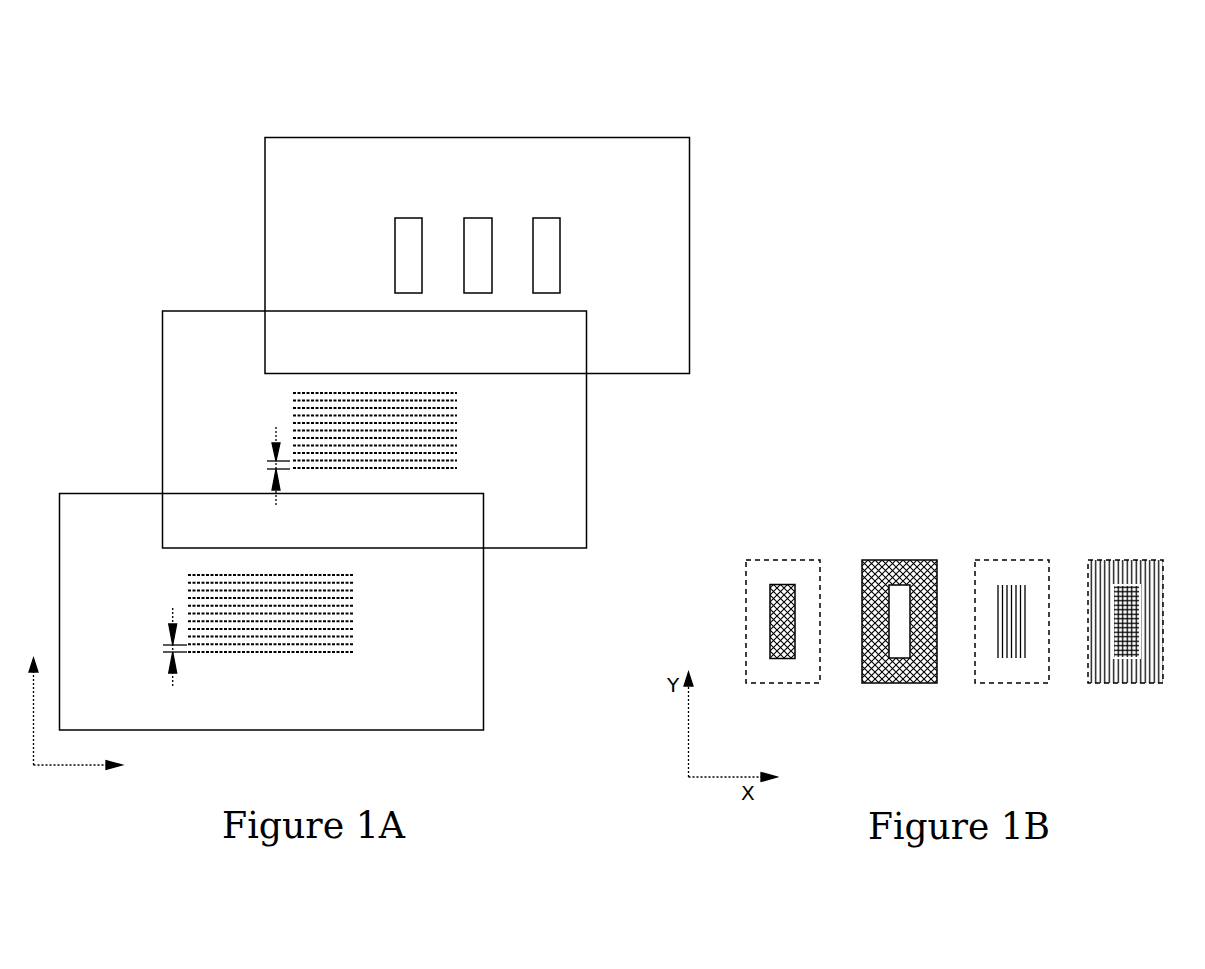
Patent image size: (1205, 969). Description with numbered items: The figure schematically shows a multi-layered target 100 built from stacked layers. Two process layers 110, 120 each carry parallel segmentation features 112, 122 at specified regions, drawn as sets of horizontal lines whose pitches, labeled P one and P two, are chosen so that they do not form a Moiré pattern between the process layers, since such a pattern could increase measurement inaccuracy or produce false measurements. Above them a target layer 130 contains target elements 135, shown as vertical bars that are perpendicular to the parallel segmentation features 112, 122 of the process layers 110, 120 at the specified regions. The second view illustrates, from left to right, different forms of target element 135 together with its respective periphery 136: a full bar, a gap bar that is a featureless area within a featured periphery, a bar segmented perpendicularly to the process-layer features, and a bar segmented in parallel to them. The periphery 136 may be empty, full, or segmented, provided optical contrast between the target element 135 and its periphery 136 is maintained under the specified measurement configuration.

In FIG. 1A, the multi-layered target 100 is at (102, 97).
In FIG. 1A, the process layer 110 is at (310, 591).
In FIG. 1A, the parallel segmentation features 112 is at (353, 628).
In FIG. 1A, the process layer 120 is at (413, 409).
In FIG. 1A, the parallel segmentation features 122 is at (457, 437).
In FIG. 1A, the target layer 130 is at (513, 236).
In FIG. 1A, the target element 135 is at (560, 249).
In FIG. 1B, the target element 135 is at (788, 660).
In FIG. 1B, the periphery 136 is at (752, 660).